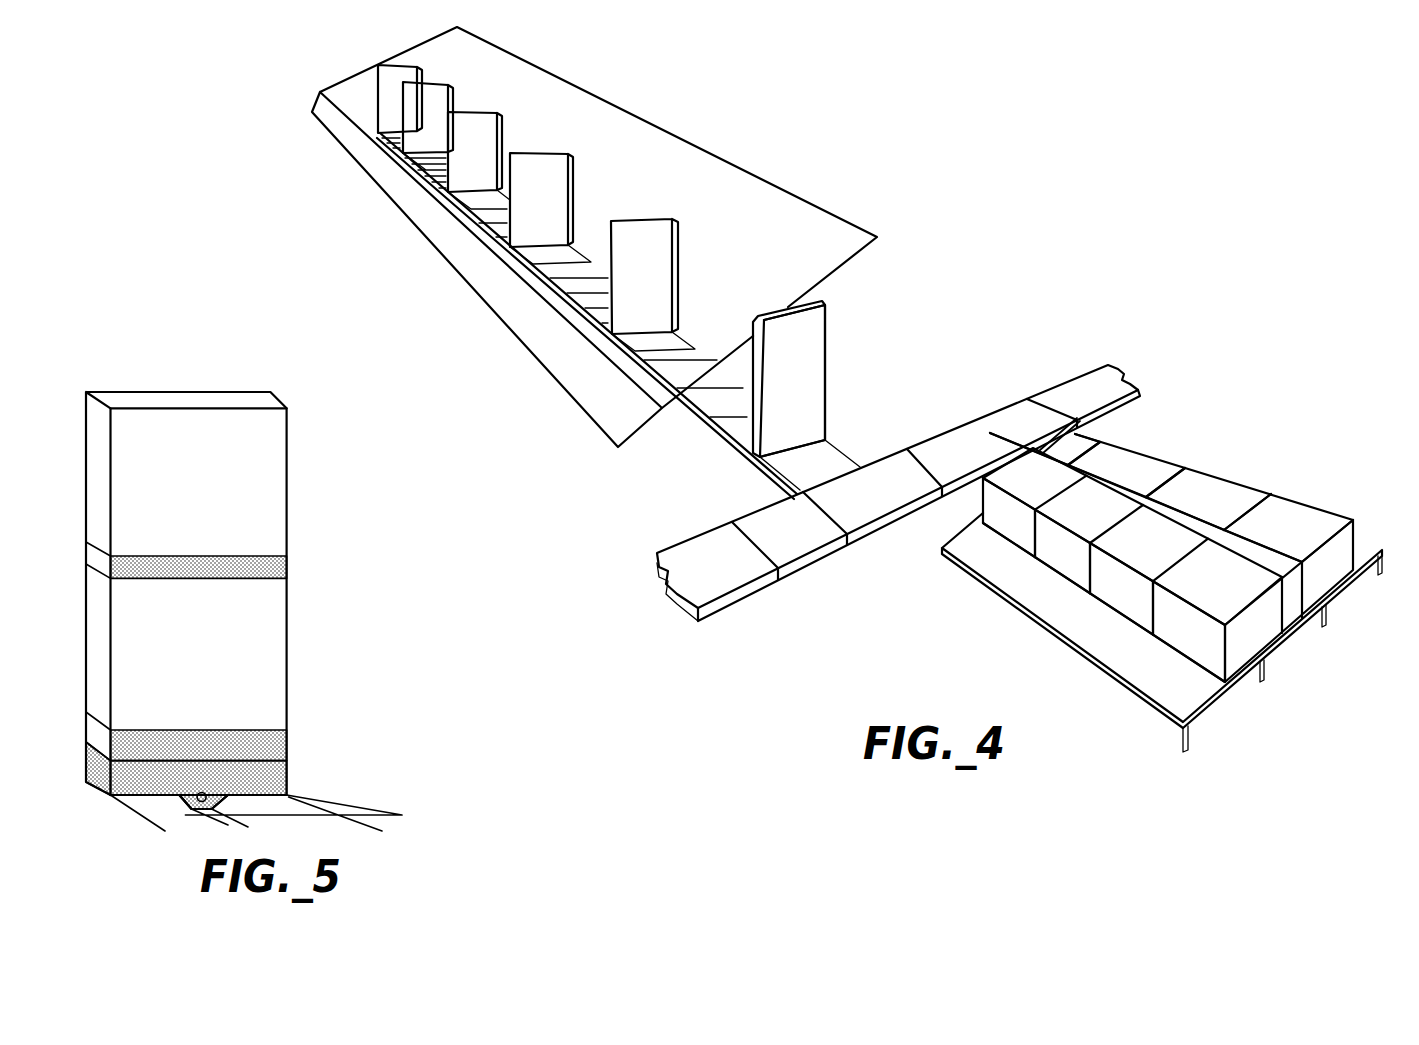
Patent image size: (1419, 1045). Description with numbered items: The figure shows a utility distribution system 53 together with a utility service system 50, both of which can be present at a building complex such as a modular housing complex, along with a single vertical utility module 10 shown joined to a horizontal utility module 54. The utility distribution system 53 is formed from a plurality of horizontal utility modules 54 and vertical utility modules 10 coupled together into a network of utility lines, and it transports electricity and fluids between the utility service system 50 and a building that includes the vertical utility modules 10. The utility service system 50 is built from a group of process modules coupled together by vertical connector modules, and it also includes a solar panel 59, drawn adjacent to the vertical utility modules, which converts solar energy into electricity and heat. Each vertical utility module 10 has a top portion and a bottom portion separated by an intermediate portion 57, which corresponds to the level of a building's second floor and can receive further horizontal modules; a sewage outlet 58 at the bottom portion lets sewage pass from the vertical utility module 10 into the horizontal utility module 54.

In FIG. 4, the vertical utility module 10 is at (830, 322).
In FIG. 5, the vertical utility module 10 is at (333, 671).
In FIG. 4, the utility service system 50 is at (935, 653).
In FIG. 4, the utility distribution system 53 is at (588, 270).
In FIG. 4, the horizontal utility module 54 is at (864, 508).
In FIG. 5, the horizontal utility module 54 is at (315, 791).
In FIG. 5, the intermediate portion 57 is at (274, 570).
In FIG. 5, the sewage outlet 58 is at (232, 801).
In FIG. 4, the solar panel 59 is at (463, 250).